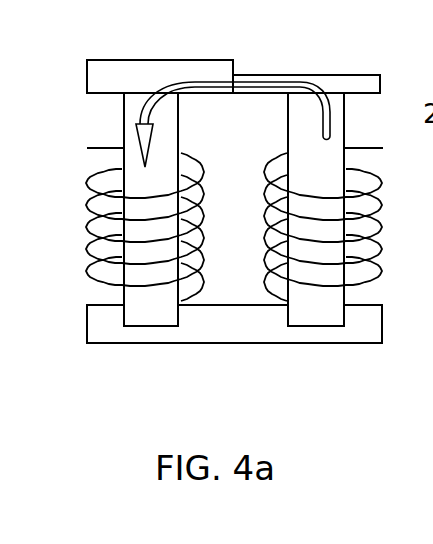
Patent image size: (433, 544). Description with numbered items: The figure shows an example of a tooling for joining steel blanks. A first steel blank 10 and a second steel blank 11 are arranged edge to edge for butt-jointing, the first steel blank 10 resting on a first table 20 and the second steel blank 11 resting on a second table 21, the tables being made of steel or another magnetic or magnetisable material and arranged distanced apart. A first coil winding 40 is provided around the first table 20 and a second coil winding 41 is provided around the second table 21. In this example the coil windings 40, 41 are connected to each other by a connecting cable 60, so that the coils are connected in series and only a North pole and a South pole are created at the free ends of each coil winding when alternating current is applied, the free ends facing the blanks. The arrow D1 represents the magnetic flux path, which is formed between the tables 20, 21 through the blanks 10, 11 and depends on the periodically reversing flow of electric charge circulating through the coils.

The first steel blank 10 is at (103, 67).
The second steel blank 11 is at (340, 82).
The arrow representing magnetic flux path D1 is at (253, 80).
The first table 20 is at (124, 104).
The second table 21 is at (313, 315).
The first coil winding 40 is at (90, 265).
The second coil winding 41 is at (384, 269).
The connecting cable 60 is at (197, 341).